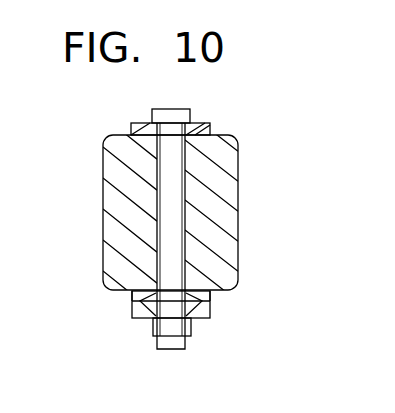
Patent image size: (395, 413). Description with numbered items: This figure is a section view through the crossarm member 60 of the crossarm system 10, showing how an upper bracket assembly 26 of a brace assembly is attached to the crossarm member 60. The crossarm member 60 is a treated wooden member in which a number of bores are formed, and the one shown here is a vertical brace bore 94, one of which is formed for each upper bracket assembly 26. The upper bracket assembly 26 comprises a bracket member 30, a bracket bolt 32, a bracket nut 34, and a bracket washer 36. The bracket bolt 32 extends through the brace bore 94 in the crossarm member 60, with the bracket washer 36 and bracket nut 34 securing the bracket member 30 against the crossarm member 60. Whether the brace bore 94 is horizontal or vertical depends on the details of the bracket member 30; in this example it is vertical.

The crossarm system 10 is at (181, 225).
The upper bracket assembly 26 is at (107, 319).
The bracket member 30 is at (204, 295).
The bracket bolt 32 is at (172, 113).
The bracket nut 34 is at (187, 328).
The bracket washer 36 is at (205, 130).
The crossarm member 60 is at (214, 212).
The brace bore 94 is at (186, 245).